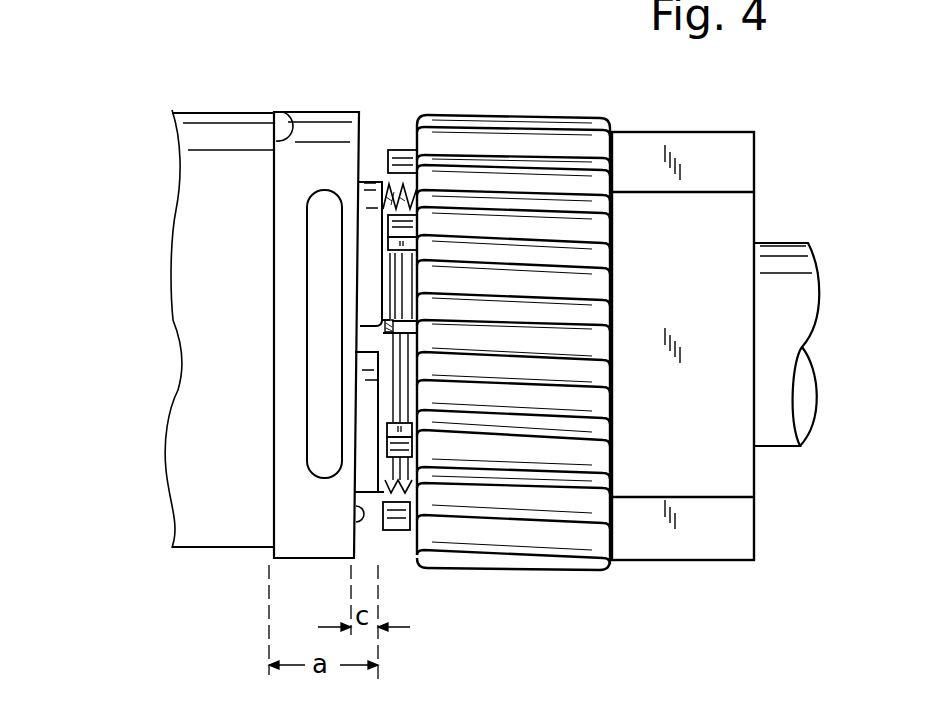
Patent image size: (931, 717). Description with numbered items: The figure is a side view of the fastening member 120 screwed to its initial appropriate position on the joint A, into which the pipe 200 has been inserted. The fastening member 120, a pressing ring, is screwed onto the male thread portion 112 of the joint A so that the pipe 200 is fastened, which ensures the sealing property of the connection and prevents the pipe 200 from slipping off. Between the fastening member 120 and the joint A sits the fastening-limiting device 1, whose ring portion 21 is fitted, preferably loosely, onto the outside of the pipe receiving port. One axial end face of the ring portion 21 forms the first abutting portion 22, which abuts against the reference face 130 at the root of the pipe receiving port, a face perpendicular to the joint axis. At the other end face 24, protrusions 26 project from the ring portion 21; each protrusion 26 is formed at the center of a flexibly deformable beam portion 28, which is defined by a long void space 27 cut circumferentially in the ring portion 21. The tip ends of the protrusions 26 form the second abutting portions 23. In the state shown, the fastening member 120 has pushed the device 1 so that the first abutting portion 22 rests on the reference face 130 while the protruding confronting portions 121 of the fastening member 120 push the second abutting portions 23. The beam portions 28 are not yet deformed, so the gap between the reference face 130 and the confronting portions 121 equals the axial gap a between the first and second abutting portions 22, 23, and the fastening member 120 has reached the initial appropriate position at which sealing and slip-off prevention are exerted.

The fastening-limiting device 1 is at (272, 323).
The ring portion 21 is at (318, 110).
The first abutting portion 22 is at (273, 173).
The second abutting portions 23 is at (391, 319).
The other end face 24 is at (357, 514).
The protrusions 26 is at (363, 353).
The long void space 27 is at (327, 222).
The beam portion 28 is at (343, 275).
The male thread portion 112 is at (408, 174).
The fastening member 120 is at (536, 115).
The confronting portions 121 is at (413, 362).
The reference face 130 is at (285, 113).
The pipe 200 is at (785, 243).
The joint A is at (193, 100).